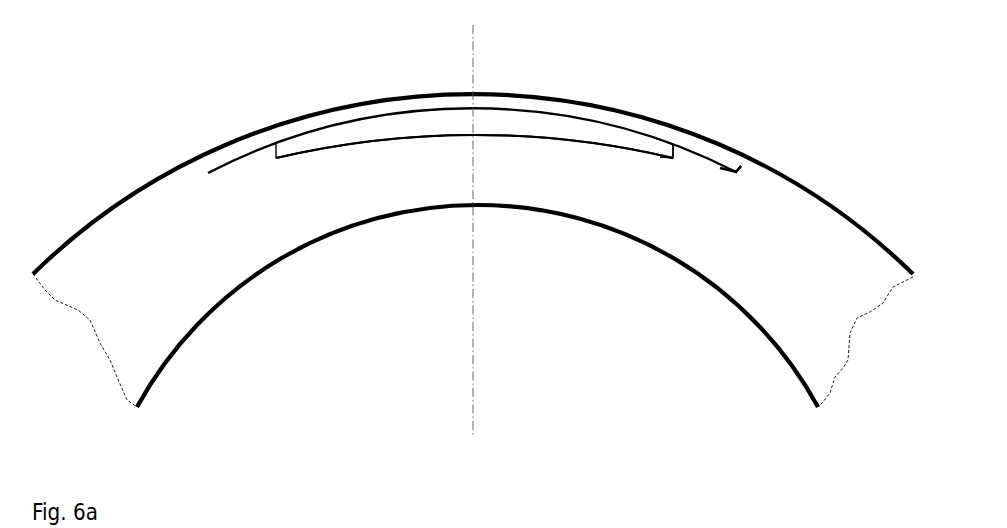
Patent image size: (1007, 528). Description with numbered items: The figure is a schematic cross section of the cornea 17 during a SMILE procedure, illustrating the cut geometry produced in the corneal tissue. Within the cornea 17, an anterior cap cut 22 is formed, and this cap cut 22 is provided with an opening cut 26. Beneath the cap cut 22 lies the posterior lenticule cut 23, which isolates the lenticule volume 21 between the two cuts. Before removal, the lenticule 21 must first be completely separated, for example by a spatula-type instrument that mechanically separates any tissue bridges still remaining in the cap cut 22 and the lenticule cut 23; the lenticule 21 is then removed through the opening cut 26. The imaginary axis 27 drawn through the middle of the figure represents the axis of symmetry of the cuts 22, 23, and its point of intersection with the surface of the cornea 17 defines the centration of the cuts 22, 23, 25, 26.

The cornea 17 is at (190, 245).
The lenticule volume 21 is at (343, 133).
The anterior cap cut 22 is at (483, 111).
The posterior lenticule cut 23 is at (483, 137).
The cut 25 is at (678, 155).
The opening cut 26 is at (747, 162).
The axis 27 is at (472, 267).